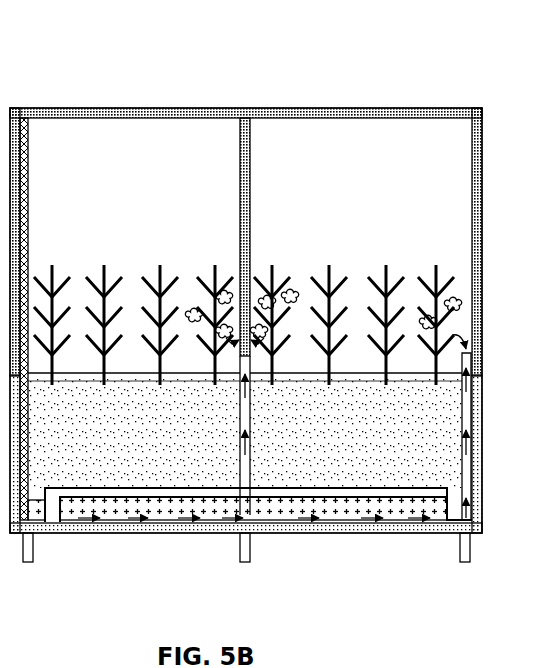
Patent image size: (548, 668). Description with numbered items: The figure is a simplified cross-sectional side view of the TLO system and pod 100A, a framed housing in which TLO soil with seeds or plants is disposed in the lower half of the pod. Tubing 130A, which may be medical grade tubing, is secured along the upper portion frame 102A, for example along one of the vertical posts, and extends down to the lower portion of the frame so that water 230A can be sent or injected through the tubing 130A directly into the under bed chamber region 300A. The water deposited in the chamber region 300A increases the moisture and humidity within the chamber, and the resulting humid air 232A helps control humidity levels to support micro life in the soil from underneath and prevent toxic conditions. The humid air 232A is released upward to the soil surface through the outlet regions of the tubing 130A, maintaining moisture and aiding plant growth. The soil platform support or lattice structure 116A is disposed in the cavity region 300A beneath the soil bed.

The TLO system and pod 100A is at (287, 74).
The upper portion frame 102A is at (346, 108).
The soil platform support or lattice structure 116A is at (116, 495).
The tubing 130A is at (28, 160).
The water 230A is at (23, 103).
The humid air 232A is at (198, 298).
The under bed chamber region 300A is at (345, 509).